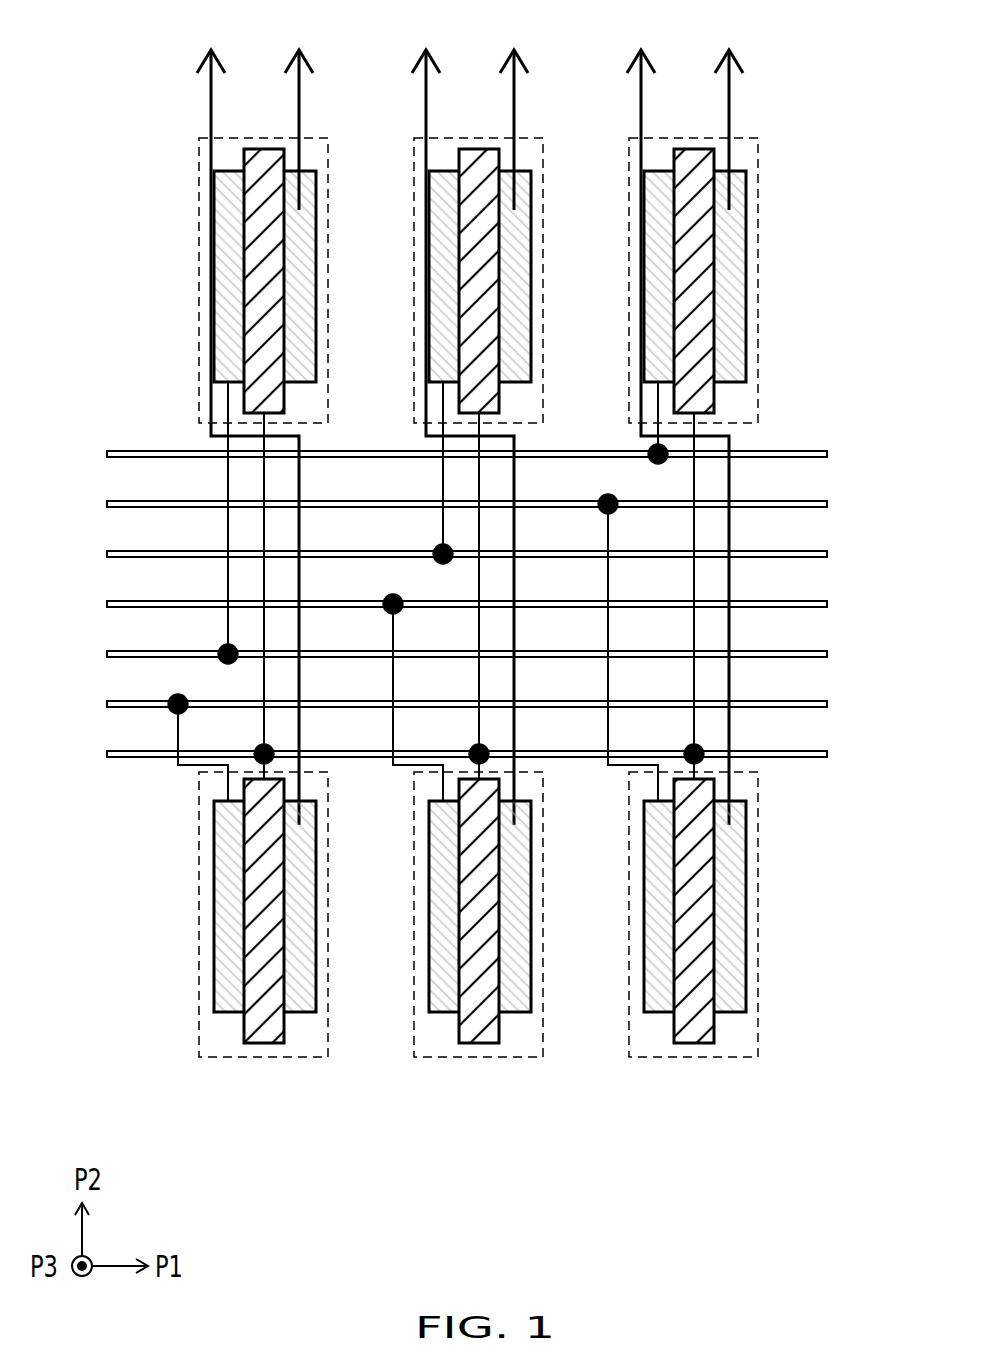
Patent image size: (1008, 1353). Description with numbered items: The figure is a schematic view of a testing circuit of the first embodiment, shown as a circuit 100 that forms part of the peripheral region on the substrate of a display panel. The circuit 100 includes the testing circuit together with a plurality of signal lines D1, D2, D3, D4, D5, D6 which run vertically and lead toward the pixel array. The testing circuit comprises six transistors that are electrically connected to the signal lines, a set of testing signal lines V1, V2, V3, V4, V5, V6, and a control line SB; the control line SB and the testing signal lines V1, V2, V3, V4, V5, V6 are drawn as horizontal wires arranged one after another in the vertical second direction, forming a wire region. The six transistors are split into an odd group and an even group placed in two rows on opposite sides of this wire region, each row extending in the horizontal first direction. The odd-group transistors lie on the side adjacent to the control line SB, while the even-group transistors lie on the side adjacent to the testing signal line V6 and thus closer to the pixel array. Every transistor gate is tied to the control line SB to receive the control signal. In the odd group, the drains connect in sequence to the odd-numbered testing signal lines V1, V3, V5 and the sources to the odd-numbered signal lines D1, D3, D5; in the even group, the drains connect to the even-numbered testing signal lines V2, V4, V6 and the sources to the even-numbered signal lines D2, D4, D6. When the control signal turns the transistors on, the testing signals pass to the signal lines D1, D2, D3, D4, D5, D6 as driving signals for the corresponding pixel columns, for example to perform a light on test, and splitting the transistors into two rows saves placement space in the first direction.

The circuit 100 is at (866, 1148).
The signal line D1 is at (211, 92).
The signal line D2 is at (300, 92).
The signal line D3 is at (426, 92).
The signal line D4 is at (515, 92).
The signal line D5 is at (641, 92).
The signal line D6 is at (730, 92).
The testing signal line V1 is at (814, 698).
The testing signal line V2 is at (814, 648).
The testing signal line V3 is at (814, 598).
The testing signal line V4 is at (814, 548).
The testing signal line V5 is at (814, 498).
The testing signal line V6 is at (814, 448).
The control line SB is at (814, 748).